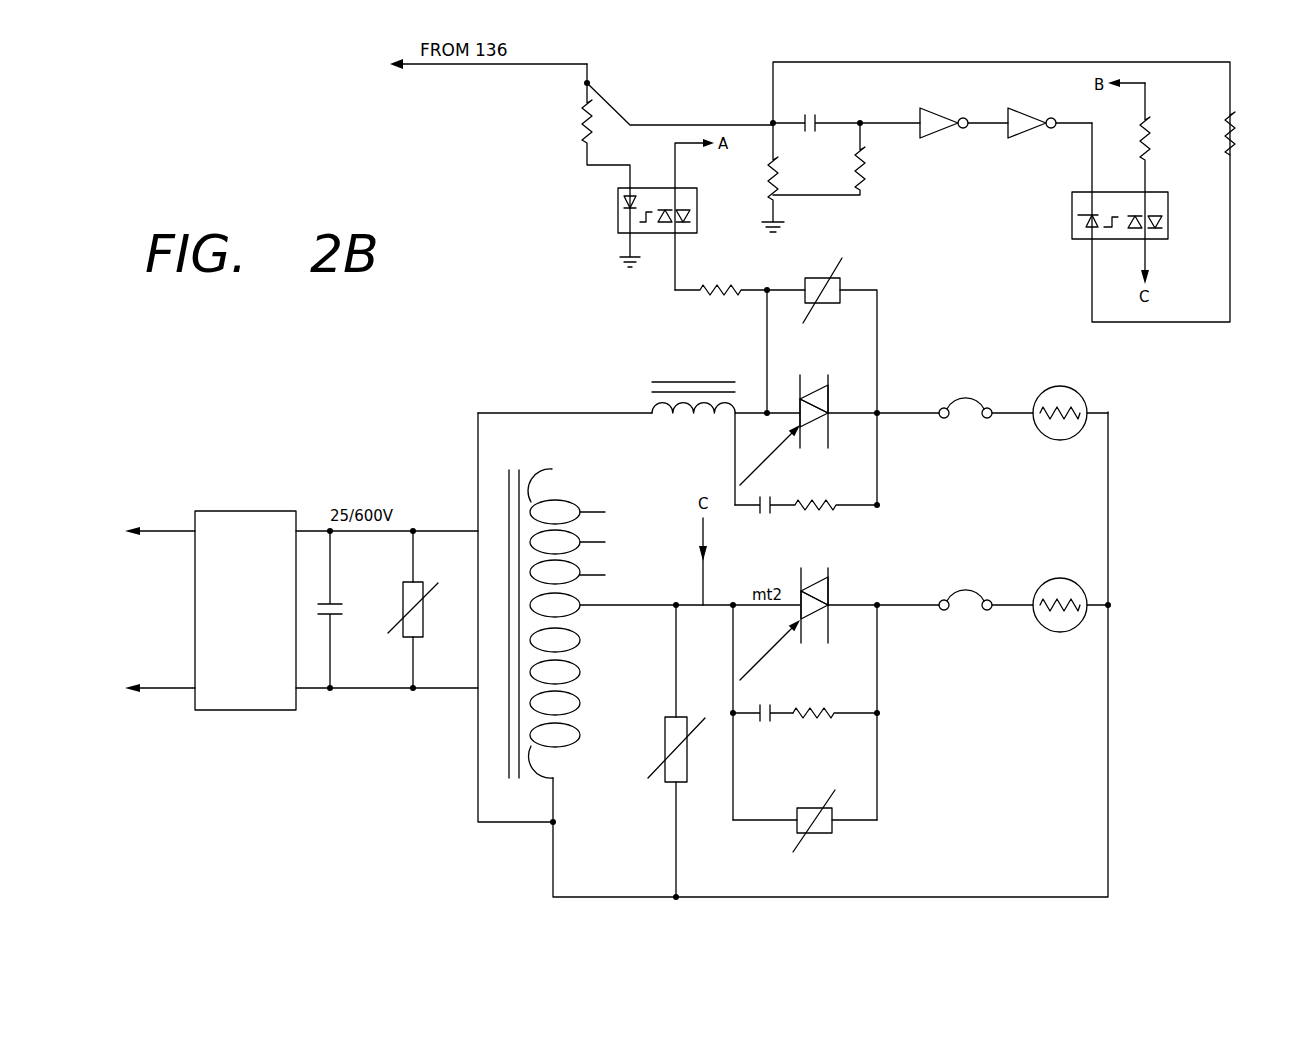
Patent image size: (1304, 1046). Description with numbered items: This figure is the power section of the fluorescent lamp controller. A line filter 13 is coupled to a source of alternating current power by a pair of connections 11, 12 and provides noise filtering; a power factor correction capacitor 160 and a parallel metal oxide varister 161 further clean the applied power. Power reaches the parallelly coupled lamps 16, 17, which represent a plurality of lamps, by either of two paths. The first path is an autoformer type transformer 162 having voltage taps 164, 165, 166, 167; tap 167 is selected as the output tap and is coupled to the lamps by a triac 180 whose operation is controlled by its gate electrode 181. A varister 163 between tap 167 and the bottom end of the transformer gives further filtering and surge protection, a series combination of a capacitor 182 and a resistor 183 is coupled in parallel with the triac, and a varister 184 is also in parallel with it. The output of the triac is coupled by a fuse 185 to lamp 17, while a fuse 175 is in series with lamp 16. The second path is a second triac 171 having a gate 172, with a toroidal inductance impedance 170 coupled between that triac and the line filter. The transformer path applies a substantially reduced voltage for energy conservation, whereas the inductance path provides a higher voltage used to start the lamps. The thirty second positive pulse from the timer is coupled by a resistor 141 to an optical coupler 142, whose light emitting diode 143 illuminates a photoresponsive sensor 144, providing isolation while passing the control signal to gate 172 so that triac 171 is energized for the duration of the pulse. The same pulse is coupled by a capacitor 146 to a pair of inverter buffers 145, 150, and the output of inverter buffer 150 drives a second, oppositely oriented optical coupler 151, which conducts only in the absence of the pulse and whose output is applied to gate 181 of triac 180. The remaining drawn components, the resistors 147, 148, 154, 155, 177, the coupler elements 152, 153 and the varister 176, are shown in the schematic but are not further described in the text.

The connection 11 is at (146, 691).
The connection 12 is at (142, 530).
The line filter 13 is at (195, 608).
The lamp 16 is at (1058, 440).
The lamp 17 is at (1058, 632).
The resistor 141 is at (580, 140).
The optical coupler 142 is at (625, 238).
The light emitting diode 143 is at (620, 197).
The photoresponsive sensor 144 is at (690, 222).
The inverter buffer 145 is at (933, 133).
The capacitor 146 is at (832, 117).
The resistor 147 is at (768, 168).
The resistor 148 is at (872, 191).
The inverter buffer 150 is at (1022, 133).
The optical coupler 151 is at (1072, 208).
The optocoupler diode 152 is at (1088, 232).
The optocoupler triac 153 is at (1152, 238).
The resistor 154 is at (1158, 149).
The resistor 155 is at (1222, 125).
The power factor correction capacitor 160 is at (360, 595).
The varister 161 is at (428, 619).
The transformer 162 is at (582, 720).
The varister 163 is at (687, 772).
The voltage tap 164 is at (582, 510).
The voltage tap 165 is at (585, 542).
The voltage tap 166 is at (585, 572).
The voltage tap 167 is at (582, 640).
The inductance impedance 170 is at (650, 408).
The triac 171 is at (832, 432).
The gate 172 is at (735, 445).
The fuse 175 is at (965, 399).
The varistor 176 is at (812, 280).
The resistor 177 is at (700, 293).
The triac 180 is at (832, 628).
The gate electrode 181 is at (742, 662).
The capacitor 182 is at (764, 726).
The resistor 183 is at (812, 709).
The varister 184 is at (828, 837).
The fuse 185 is at (965, 591).